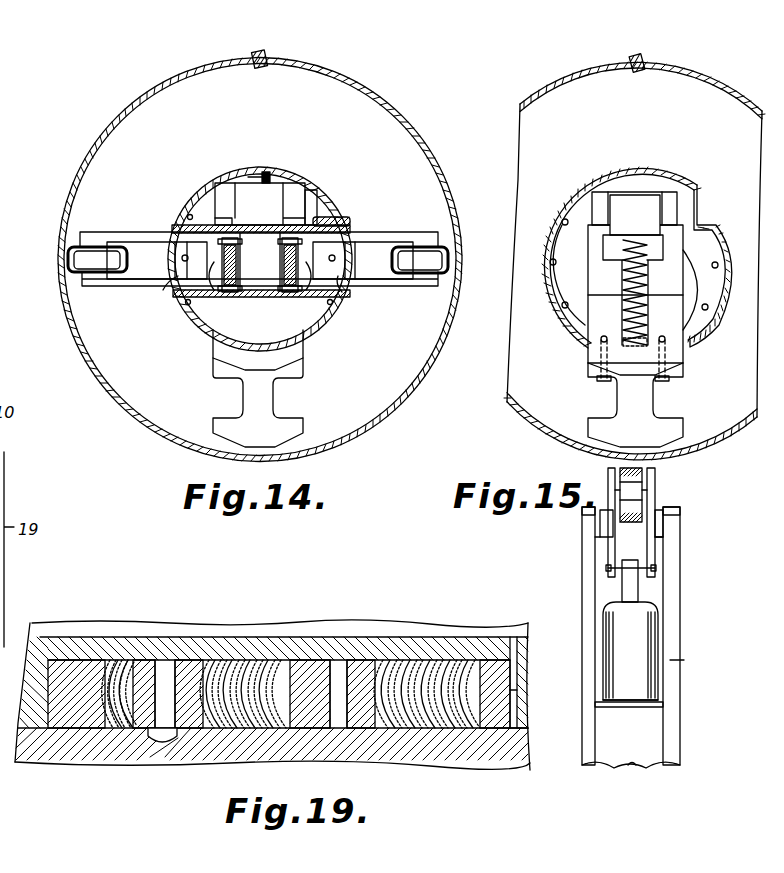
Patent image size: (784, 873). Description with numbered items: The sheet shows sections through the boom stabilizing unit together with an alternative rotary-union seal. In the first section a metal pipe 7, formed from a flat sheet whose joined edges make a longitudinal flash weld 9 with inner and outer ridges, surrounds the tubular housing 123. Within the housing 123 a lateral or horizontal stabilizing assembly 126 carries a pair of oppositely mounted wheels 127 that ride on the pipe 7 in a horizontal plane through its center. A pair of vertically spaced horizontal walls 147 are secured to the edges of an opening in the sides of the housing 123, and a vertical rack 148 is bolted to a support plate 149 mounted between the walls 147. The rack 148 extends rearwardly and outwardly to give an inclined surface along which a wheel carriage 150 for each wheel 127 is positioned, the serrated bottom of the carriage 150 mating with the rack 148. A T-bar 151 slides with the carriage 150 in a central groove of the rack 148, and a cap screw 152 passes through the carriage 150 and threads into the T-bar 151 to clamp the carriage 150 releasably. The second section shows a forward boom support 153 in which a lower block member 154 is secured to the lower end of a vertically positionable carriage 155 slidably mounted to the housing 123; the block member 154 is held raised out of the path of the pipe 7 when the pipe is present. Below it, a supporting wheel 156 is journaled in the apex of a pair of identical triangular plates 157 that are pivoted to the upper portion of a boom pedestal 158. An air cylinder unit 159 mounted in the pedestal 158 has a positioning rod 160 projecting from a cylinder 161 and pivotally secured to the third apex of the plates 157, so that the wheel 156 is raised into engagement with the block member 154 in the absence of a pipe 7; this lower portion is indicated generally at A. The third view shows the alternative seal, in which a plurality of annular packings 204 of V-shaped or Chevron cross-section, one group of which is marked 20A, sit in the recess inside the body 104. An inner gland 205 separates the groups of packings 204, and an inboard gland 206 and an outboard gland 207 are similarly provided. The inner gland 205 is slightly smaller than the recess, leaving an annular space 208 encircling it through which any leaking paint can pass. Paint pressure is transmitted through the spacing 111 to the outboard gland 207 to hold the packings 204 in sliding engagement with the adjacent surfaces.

In FIG. 14, the metal pipe 7 is at (364, 94).
In FIG. 15, the metal pipe 7 is at (531, 96).
In FIG. 14, the longitudinal flash weld 9 is at (268, 60).
In FIG. 15, the longitudinal flash weld 9 is at (643, 62).
In FIG. 14, the tubular housing 123 is at (222, 178).
In FIG. 15, the tubular housing 123 is at (592, 186).
In FIG. 14, the lateral stabilizing assembly 126 is at (168, 226).
In FIG. 14, the wheel 127 is at (94, 252).
In FIG. 14, the horizontal wall 147 is at (268, 224).
In FIG. 14, the vertical rack 148 is at (242, 258).
In FIG. 14, the support plate 149 is at (182, 260).
In FIG. 14, the wheel carriage 150 is at (128, 282).
In FIG. 14, the T-bar 151 is at (230, 292).
In FIG. 14, the cap screw 152 is at (178, 285).
In FIG. 15, the forward boom support 153 is at (692, 356).
In FIG. 14, the lower block member 154 is at (290, 428).
In FIG. 15, the lower block member 154 is at (592, 428).
In FIG. 15, the carriage 155 is at (590, 281).
In FIG. 15, the supporting wheel 156 is at (625, 472).
In FIG. 15, the triangular plate 157 is at (676, 573).
In FIG. 15, the boom pedestal 158 is at (633, 762).
In FIG. 15, the air cylinder unit 159 is at (664, 636).
In FIG. 15, the positioning rod 160 is at (625, 587).
In FIG. 15, the cylinder 161 is at (608, 650).
In FIG. 15, the assembly A is at (688, 660).
In FIG. 19, the body 104 is at (437, 756).
In FIG. 19, the spacing 111 is at (513, 690).
In FIG. 19, the annular packing 204 is at (128, 665).
In FIG. 19, the laminate layer section 20A is at (249, 662).
In FIG. 19, the inner gland 205 is at (215, 722).
In FIG. 19, the inboard gland 206 is at (73, 662).
In FIG. 19, the outboard gland 207 is at (501, 736).
In FIG. 19, the annular space 208 is at (196, 662).